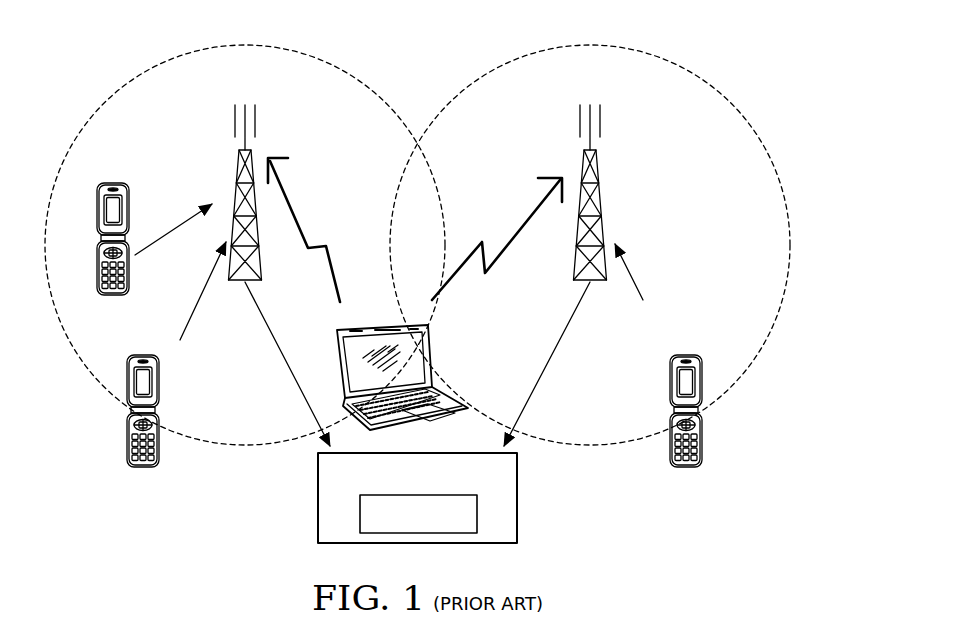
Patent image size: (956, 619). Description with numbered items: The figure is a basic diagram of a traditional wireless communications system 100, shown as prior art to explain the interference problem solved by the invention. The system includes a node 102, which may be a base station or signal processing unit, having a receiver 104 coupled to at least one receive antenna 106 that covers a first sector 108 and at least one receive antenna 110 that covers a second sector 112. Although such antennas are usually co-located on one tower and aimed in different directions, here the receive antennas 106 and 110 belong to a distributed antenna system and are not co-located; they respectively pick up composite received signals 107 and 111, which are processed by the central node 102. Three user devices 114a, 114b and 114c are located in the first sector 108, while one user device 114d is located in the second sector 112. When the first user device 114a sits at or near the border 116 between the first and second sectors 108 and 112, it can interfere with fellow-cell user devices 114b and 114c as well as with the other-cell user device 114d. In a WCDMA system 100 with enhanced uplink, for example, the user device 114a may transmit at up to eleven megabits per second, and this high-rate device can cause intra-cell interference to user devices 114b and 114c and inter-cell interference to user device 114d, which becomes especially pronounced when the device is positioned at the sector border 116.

The wireless communications system 100 is at (742, 45).
The node 102 is at (517, 498).
The receiver 104 is at (437, 495).
The receive antenna 106 is at (238, 172).
The composite received signal 107 is at (290, 370).
The first sector 108 is at (106, 102).
The receive antenna 110 is at (594, 172).
The composite received signal 111 is at (546, 370).
The second sector 112 is at (729, 103).
The user device 114a is at (430, 370).
The user device 114b is at (143, 468).
The user device 114c is at (113, 295).
The user device 114d is at (685, 468).
The border 116 is at (432, 240).